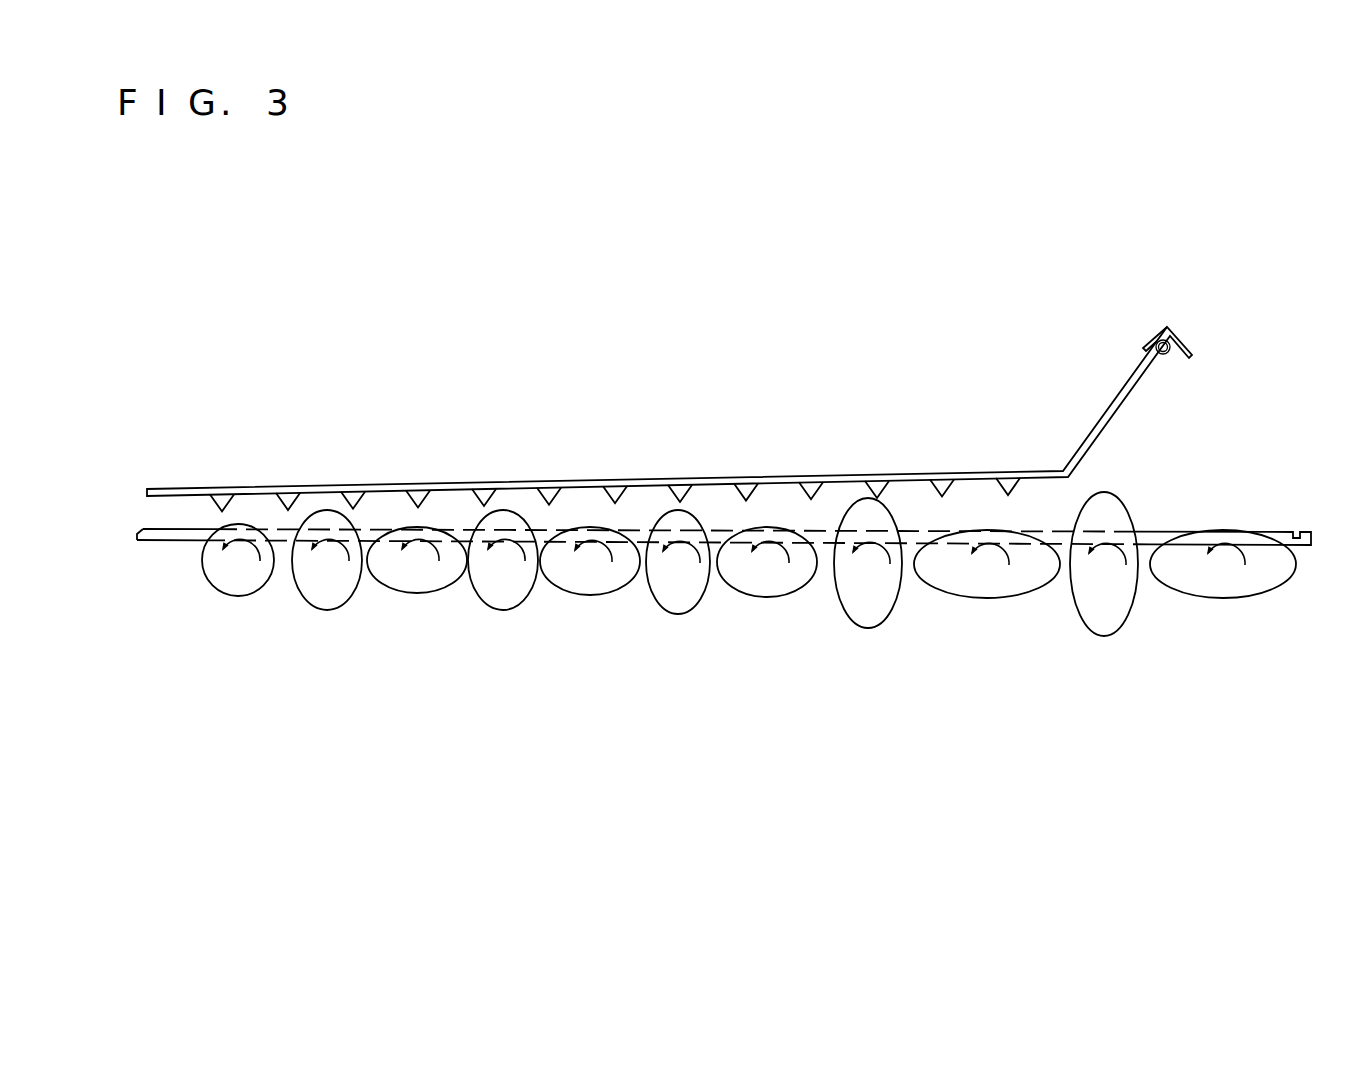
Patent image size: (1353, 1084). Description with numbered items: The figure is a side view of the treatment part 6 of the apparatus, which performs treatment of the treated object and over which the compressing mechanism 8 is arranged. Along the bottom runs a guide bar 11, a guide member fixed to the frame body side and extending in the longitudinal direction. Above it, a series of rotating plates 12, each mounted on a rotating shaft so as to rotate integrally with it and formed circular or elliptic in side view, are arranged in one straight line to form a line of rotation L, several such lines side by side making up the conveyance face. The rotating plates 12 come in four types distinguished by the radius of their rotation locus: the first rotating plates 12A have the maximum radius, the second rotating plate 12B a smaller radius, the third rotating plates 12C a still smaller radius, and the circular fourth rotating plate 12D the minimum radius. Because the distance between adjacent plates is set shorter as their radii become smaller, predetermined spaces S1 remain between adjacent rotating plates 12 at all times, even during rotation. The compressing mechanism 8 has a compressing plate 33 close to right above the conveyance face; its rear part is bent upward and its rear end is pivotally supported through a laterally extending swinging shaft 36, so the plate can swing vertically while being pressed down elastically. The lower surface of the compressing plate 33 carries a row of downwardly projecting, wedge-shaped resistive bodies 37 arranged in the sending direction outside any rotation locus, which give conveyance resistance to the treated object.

The treatment part 6 is at (701, 530).
The compressing mechanism 8 is at (642, 392).
The compressing plate 33 is at (182, 488).
The resistive bodies 37 is at (690, 491).
The swinging shaft 36 is at (1158, 343).
The guide bars 11 is at (158, 542).
The rotating plates 12 is at (744, 630).
The first rotating plates 12A is at (1020, 597).
The second rotating plate 12B is at (843, 603).
The third rotating plates 12C is at (356, 594).
The fourth rotating plate 12D is at (253, 592).
The spaces S1 is at (467, 543).
The line of rotation L is at (667, 687).